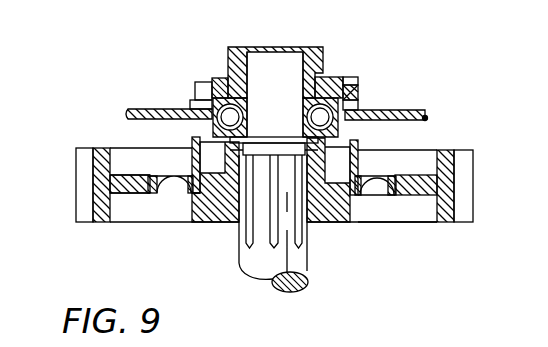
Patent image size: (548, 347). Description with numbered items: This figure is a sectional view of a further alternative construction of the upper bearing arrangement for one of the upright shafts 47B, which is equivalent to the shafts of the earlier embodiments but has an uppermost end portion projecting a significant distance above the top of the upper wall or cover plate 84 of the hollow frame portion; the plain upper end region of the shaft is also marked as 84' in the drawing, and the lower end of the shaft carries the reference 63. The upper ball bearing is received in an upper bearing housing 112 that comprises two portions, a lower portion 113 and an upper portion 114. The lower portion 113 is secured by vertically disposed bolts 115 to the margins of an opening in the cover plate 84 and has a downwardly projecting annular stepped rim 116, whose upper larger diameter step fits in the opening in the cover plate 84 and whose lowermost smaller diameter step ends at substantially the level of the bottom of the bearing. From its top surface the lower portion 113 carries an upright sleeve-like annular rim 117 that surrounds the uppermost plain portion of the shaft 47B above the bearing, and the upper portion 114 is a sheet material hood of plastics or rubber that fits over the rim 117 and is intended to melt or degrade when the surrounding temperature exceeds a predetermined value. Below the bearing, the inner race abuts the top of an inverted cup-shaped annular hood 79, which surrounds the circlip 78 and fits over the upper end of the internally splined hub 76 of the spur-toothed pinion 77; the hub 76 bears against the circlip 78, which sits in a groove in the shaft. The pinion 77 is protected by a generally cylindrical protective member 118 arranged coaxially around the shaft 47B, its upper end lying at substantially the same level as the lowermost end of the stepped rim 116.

The shaft 63 is at (247, 262).
The shaft 47B is at (313, 276).
The pinion hub 76 is at (222, 194).
The pinion 77 is at (88, 147).
The circlip 78 is at (300, 137).
The annular hood 79 is at (357, 150).
The upper wall or cover plate 84 is at (296, 105).
The shaft upper portion 84' is at (275, 94).
The upper bearing housing 112 is at (188, 93).
The lower portion of upper bearing housing 113 is at (358, 86).
The upper portion of upper bearing housing 114 is at (285, 47).
The bolts 115 is at (210, 78).
The annular stepped rim 116 is at (205, 130).
The upright annular rim 117 is at (340, 77).
The protective member 118 is at (360, 167).